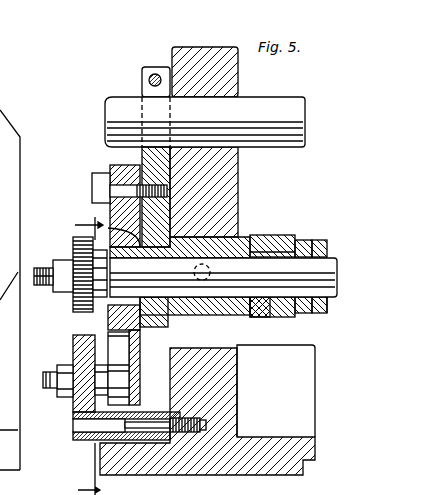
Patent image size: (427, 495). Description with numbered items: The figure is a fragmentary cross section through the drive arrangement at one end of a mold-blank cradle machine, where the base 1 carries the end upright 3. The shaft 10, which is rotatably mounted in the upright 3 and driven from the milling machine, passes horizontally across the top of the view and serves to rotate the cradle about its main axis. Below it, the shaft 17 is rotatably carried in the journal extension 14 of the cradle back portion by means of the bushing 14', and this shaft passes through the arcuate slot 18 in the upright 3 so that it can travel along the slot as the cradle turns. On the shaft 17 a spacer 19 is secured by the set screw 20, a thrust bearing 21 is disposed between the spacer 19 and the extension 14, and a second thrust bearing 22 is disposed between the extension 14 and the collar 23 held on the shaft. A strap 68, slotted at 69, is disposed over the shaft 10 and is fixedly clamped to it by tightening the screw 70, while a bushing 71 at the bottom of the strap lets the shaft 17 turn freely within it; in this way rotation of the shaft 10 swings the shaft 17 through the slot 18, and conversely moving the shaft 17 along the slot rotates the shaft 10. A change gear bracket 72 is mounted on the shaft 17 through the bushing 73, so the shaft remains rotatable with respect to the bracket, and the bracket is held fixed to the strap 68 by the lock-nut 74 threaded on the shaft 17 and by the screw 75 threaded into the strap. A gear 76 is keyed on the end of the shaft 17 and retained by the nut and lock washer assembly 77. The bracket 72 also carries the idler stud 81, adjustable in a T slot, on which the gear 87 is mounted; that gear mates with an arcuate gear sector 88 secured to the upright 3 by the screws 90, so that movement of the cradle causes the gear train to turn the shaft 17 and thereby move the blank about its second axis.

The base 1 is at (284, 411).
The end upright 3 is at (2, 101).
The shaft 10 is at (261, 98).
The journal extension 14 is at (283, 258).
The bushing 14' is at (277, 322).
The shaft 17 is at (324, 316).
The arcuate slot 18 is at (222, 347).
The spacer 19 is at (238, 208).
The set screw 20 is at (203, 292).
The thrust bearing 21 is at (221, 240).
The thrust bearing 22 is at (306, 240).
The collar 23 is at (320, 241).
The strap 68 is at (142, 155).
The slot 69 is at (142, 83).
The screw 70 is at (154, 73).
The bushing 71 is at (165, 325).
The change gear bracket 72 is at (111, 212).
The bushing 73 is at (108, 222).
The lock-nut 74 is at (73, 224).
The screw 75 is at (92, 178).
The gear 76 is at (78, 240).
The nut and lock washer assembly 77 is at (68, 300).
The idler stud 81 is at (50, 380).
The gear 87 is at (73, 351).
The arcuate gear sector 88 is at (82, 442).
The screw 90 is at (100, 469).